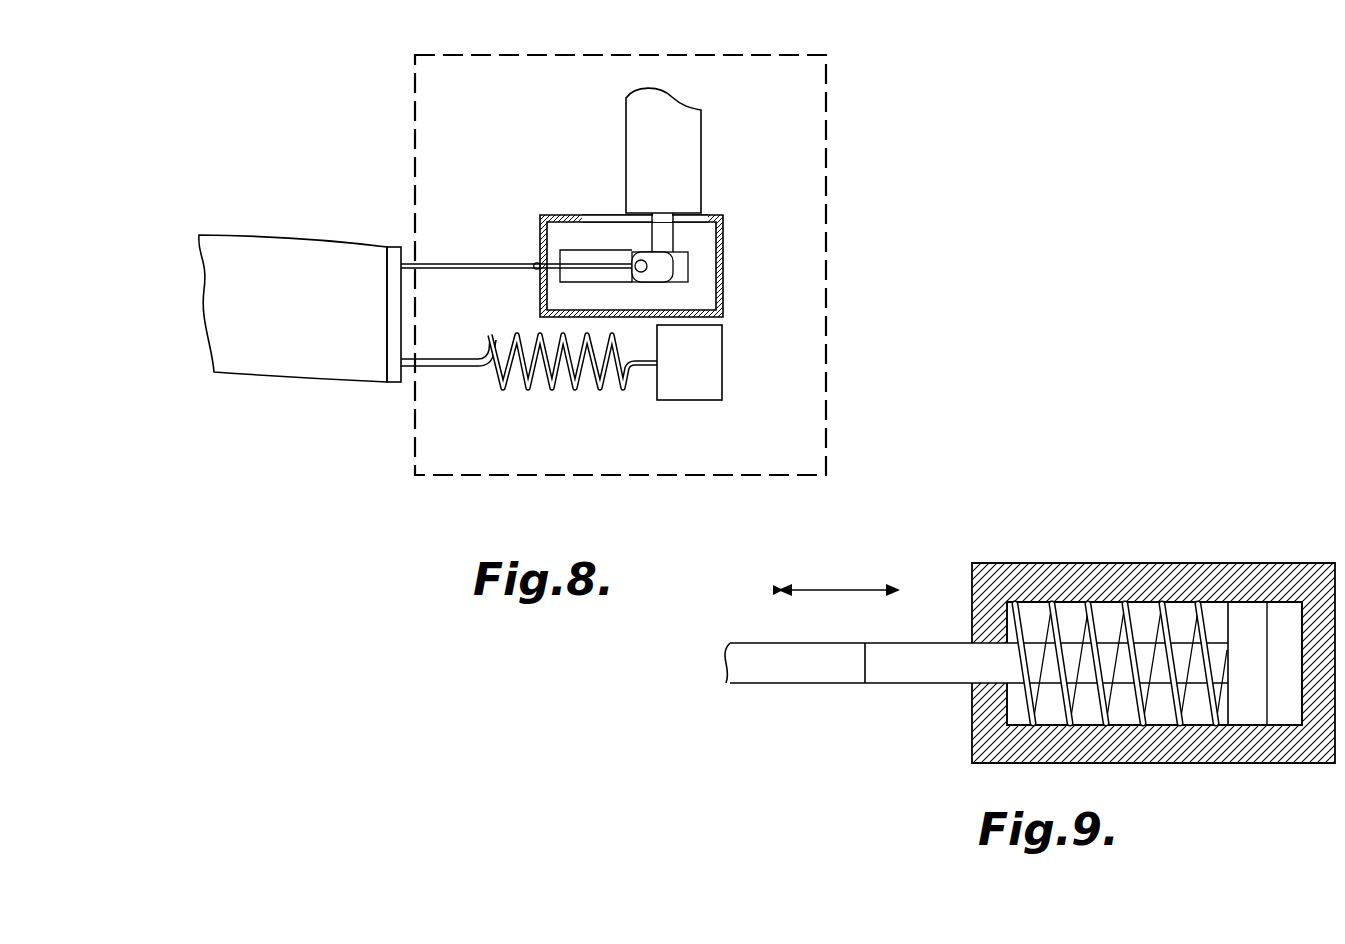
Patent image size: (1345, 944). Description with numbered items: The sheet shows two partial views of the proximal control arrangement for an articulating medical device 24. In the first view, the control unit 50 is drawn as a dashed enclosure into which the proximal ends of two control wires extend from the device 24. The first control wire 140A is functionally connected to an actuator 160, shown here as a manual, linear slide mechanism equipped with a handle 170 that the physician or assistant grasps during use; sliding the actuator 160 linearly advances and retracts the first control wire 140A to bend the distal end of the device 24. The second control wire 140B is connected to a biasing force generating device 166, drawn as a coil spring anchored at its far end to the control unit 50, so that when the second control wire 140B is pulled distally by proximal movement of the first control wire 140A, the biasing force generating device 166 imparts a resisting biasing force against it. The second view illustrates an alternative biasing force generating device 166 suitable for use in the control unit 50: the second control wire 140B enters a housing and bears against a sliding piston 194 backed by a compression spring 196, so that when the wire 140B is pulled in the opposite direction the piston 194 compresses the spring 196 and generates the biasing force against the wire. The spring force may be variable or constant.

In FIG. 8, the device 24 is at (219, 236).
In FIG. 8, the control unit 50 is at (826, 103).
In FIG. 8, the first control wire 140A is at (454, 262).
In FIG. 8, the second control wire 140B is at (438, 372).
In FIG. 9, the second control wire 140B is at (752, 650).
In FIG. 8, the actuator 160 is at (736, 208).
In FIG. 8, the biasing force generating device 166 is at (539, 398).
In FIG. 9, the biasing force generating device 166 is at (1116, 542).
In FIG. 8, the handle 170 is at (698, 148).
In FIG. 9, the sliding piston 194 is at (1248, 610).
In FIG. 9, the compression spring 196 is at (1178, 698).